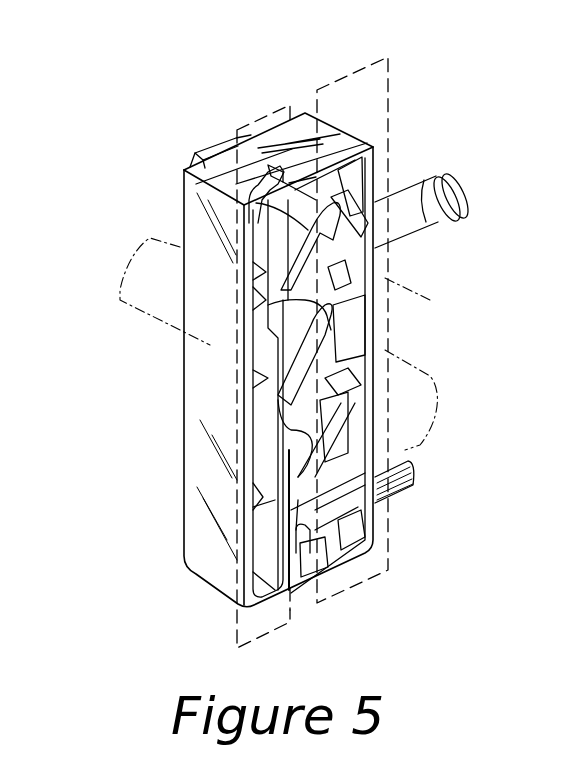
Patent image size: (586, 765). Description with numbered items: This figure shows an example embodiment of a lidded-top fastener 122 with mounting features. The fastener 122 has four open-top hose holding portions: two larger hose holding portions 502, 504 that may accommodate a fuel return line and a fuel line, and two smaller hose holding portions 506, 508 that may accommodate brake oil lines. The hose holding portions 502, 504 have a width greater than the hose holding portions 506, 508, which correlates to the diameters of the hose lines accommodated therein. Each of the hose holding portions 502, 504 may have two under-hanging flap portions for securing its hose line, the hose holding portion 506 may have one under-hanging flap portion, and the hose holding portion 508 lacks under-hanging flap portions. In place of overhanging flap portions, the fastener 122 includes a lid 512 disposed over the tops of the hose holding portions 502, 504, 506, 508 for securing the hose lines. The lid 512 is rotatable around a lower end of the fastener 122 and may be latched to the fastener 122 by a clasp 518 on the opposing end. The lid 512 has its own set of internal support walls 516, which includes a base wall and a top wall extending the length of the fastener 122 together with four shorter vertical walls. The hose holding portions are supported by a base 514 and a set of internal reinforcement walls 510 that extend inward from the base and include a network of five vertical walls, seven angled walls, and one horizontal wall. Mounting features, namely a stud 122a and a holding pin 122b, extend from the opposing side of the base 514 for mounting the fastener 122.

The fastener 122 is at (198, 120).
The stud 122a is at (455, 192).
The holding pin 122b is at (408, 480).
The hose holding portion 502 is at (308, 243).
The hose holding portion 504 is at (305, 348).
The hose holding portion 506 is at (301, 452).
The hose holding portion 508 is at (288, 540).
The set of internal reinforcement walls 510 is at (350, 590).
The lid 512 is at (207, 573).
The base 514 is at (377, 316).
The set of internal support walls 516 is at (255, 637).
The clasp 518 is at (276, 182).